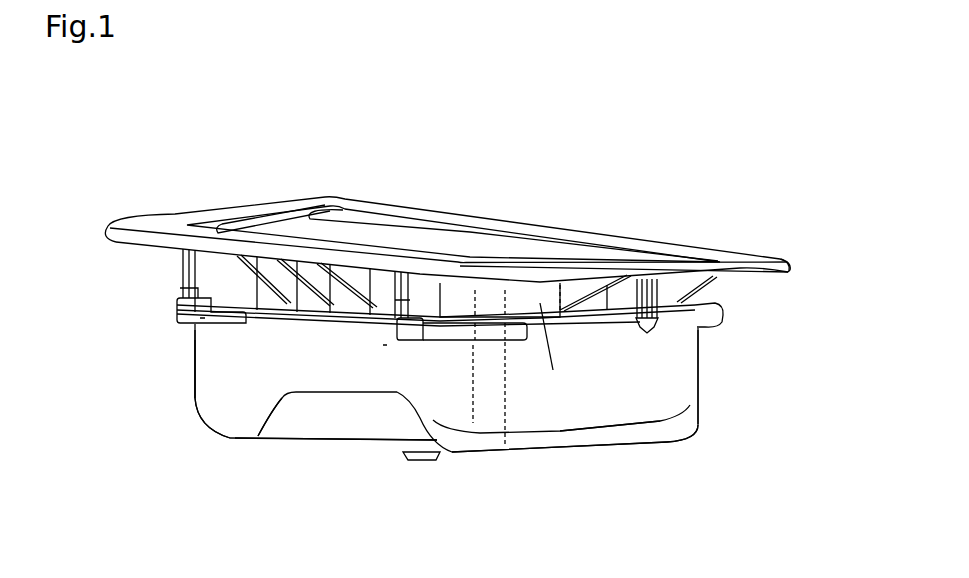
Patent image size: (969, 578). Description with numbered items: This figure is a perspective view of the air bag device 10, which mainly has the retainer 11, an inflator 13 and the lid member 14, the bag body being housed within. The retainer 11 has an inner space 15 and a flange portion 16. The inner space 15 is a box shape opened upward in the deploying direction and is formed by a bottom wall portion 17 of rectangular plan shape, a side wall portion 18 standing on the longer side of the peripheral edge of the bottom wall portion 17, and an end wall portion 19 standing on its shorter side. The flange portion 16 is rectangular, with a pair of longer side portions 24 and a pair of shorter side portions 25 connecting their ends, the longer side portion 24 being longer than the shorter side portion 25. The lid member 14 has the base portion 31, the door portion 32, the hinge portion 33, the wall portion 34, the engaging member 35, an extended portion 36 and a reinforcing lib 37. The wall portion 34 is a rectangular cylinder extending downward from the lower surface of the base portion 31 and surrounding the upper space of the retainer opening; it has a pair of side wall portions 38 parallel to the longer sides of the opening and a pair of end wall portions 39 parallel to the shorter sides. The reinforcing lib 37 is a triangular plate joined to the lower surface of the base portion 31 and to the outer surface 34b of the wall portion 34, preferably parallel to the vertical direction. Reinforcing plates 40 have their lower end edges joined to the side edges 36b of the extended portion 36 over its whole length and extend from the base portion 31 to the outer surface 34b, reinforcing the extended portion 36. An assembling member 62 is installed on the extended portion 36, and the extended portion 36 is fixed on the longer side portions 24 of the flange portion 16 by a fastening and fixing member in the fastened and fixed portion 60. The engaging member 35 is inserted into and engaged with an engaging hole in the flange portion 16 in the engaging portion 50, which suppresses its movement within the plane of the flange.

The air bag device 10 is at (710, 196).
The retainer 11 is at (706, 394).
The inflator 13 is at (418, 448).
The lid member 14 is at (513, 212).
The inner space 15 is at (562, 457).
The flange portion 16 is at (165, 399).
The bottom wall portion 17 is at (278, 440).
The side wall portion 18 is at (197, 373).
The end wall portion 19 is at (587, 407).
The longer side portion 24 is at (228, 338).
The shorter side portion 25 is at (612, 375).
The base portion 31 is at (787, 263).
The door portion 32 is at (380, 240).
The hinge portion 33 is at (287, 237).
The wall portion 34 is at (489, 398).
The outer surface of the wall portion 34b is at (463, 305).
The engaging member 35 is at (650, 335).
The extended portion 36 is at (285, 428).
The side edge of the extended portion 36b is at (178, 310).
The reinforcing lib 37 is at (703, 289).
The side wall portion of the wall portion 38 is at (262, 325).
The end wall portion of the wall portion 39 is at (540, 303).
The reinforcing plate 40 is at (350, 272).
The engaging portion 50 is at (663, 328).
The fastened and fixed portion 60 is at (205, 318).
The assembling member 62 is at (430, 285).